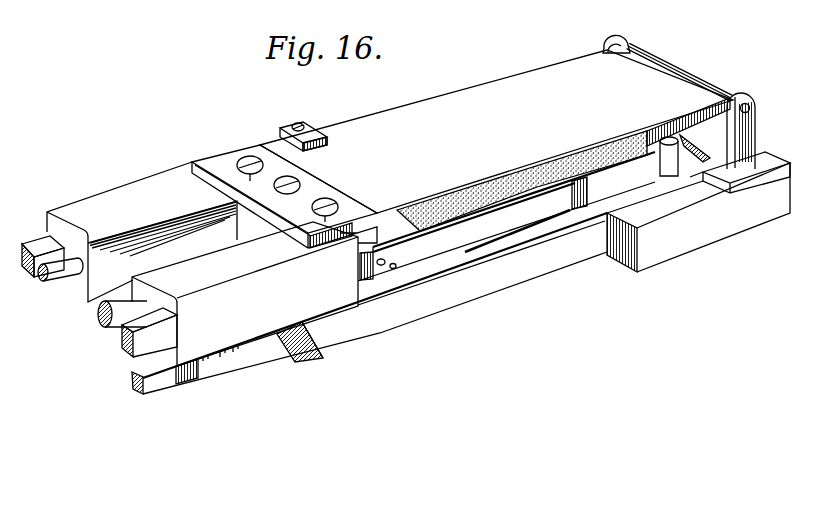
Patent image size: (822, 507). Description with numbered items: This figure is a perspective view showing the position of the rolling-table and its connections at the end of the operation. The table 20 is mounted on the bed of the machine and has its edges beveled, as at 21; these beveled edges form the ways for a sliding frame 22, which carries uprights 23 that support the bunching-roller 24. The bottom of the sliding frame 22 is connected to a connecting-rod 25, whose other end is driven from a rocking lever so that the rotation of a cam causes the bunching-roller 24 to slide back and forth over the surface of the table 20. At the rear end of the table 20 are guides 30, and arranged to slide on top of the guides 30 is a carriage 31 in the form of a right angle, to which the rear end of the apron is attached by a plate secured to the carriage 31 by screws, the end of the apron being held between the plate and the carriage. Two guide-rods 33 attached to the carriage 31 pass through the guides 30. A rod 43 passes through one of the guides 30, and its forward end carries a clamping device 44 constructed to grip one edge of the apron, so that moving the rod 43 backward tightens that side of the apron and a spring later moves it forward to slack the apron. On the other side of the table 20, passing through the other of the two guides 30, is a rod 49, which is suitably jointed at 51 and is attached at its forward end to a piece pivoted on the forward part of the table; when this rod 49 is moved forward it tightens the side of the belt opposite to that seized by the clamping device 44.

The table 20 is at (423, 283).
The beveled edges 21 is at (318, 358).
The sliding frame 22 is at (676, 250).
The uprights 23 is at (757, 118).
The bunching-roller 24 is at (630, 46).
The connecting-rod 25 is at (188, 367).
The guides 30 is at (240, 330).
The carriage 31 is at (216, 158).
The guide-rods 33 is at (68, 284).
The rod 43 is at (25, 278).
The clamping device 44 is at (294, 127).
The rod 49 is at (125, 346).
The joint 51 is at (583, 207).